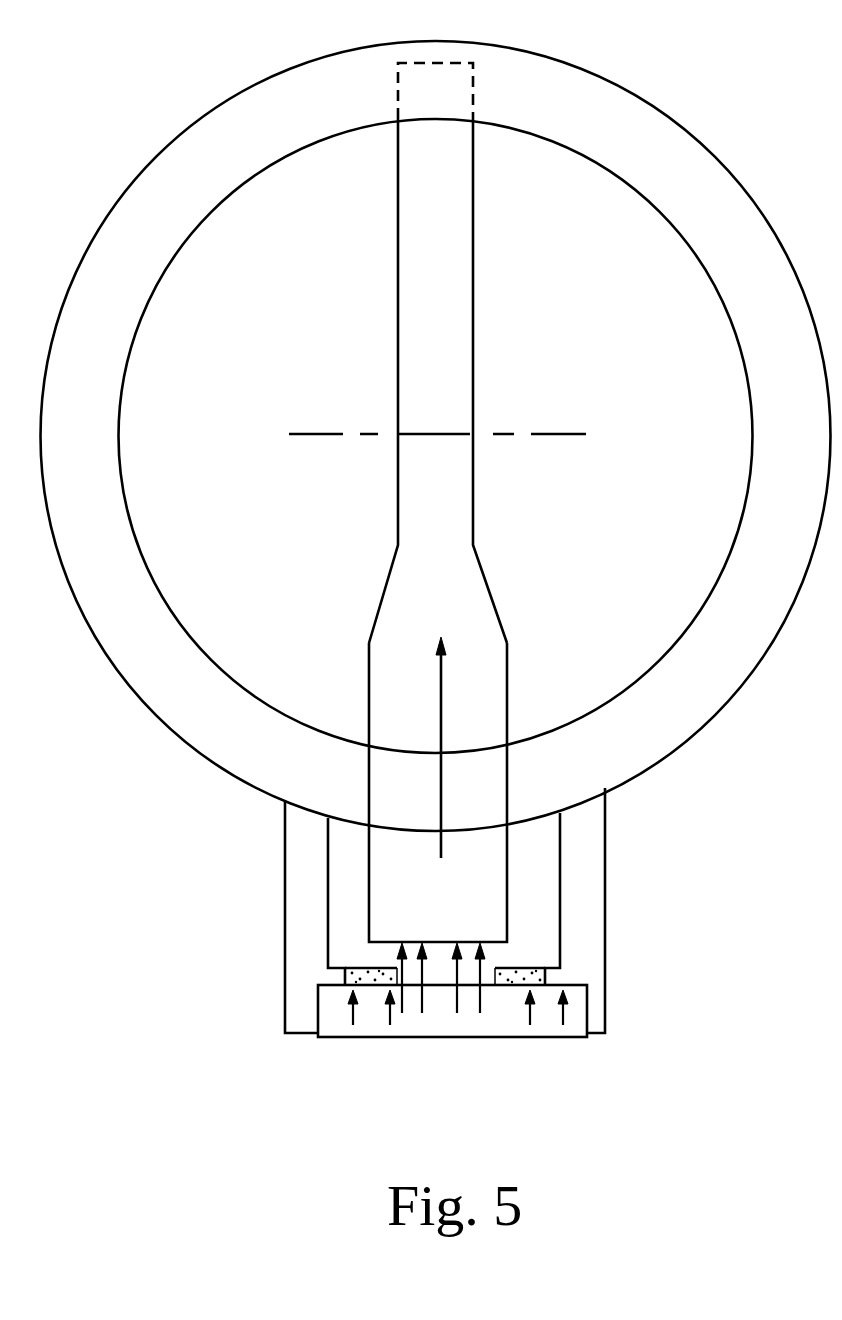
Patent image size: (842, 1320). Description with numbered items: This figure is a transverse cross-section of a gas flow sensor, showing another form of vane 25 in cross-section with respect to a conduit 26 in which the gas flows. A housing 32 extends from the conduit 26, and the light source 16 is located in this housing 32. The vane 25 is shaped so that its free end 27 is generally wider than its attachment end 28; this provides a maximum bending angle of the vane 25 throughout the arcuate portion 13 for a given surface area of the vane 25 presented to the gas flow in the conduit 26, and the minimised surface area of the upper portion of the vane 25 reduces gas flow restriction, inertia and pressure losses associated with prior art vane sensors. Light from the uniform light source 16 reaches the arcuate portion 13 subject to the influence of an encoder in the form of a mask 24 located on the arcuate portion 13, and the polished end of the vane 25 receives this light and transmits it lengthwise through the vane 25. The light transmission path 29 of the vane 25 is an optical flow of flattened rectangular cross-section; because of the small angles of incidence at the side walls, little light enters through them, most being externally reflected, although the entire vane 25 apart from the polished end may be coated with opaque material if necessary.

The arcuate portion 13 is at (362, 1060).
The light source 16 is at (542, 1025).
The mask 24 is at (343, 983).
The vane 25 is at (473, 382).
The conduit 26 is at (603, 93).
The free end 27 is at (461, 899).
The attachment end 28 is at (450, 163).
The light transmission path 29 is at (439, 774).
The housing 32 is at (607, 895).